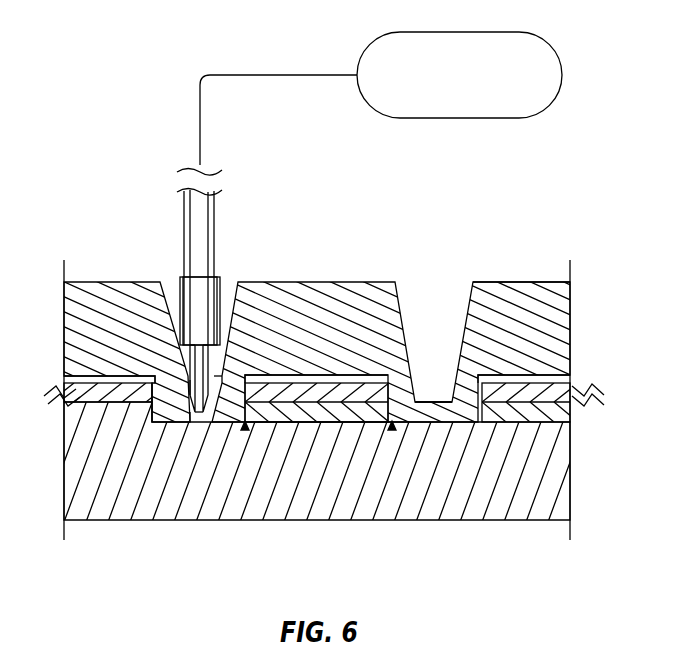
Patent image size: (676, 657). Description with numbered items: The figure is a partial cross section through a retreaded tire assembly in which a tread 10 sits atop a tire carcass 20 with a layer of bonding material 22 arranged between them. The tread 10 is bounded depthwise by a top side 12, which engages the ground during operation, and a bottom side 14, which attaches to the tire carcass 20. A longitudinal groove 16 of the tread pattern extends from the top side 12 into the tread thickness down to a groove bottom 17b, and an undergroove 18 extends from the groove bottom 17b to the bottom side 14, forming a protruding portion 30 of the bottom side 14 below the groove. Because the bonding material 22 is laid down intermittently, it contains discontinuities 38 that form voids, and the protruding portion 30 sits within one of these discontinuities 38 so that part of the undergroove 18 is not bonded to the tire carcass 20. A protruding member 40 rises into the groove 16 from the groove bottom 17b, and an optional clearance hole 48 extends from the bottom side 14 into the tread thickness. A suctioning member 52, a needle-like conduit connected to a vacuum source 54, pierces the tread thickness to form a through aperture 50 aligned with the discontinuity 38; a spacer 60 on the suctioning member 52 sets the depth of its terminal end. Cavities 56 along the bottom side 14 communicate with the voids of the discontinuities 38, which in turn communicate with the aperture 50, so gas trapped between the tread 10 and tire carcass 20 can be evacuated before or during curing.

The tread 10 is at (535, 282).
The top side 12 is at (274, 282).
The bottom side 14 is at (298, 425).
The groove 16 is at (438, 292).
The groove bottom 17b is at (430, 400).
The undergroove 18 is at (445, 405).
The tire carcass 20 is at (560, 470).
The bonding material 22 is at (72, 394).
The protruding portion 30 is at (170, 427).
The discontinuities 38 is at (245, 428).
The protruding members 40 is at (182, 377).
The clearance hole 48 is at (193, 423).
The aperture 50 is at (208, 412).
The suctioning member 52 is at (183, 217).
The vacuum source 54 is at (477, 32).
The cavities 56 is at (345, 377).
The spacer 60 is at (213, 365).